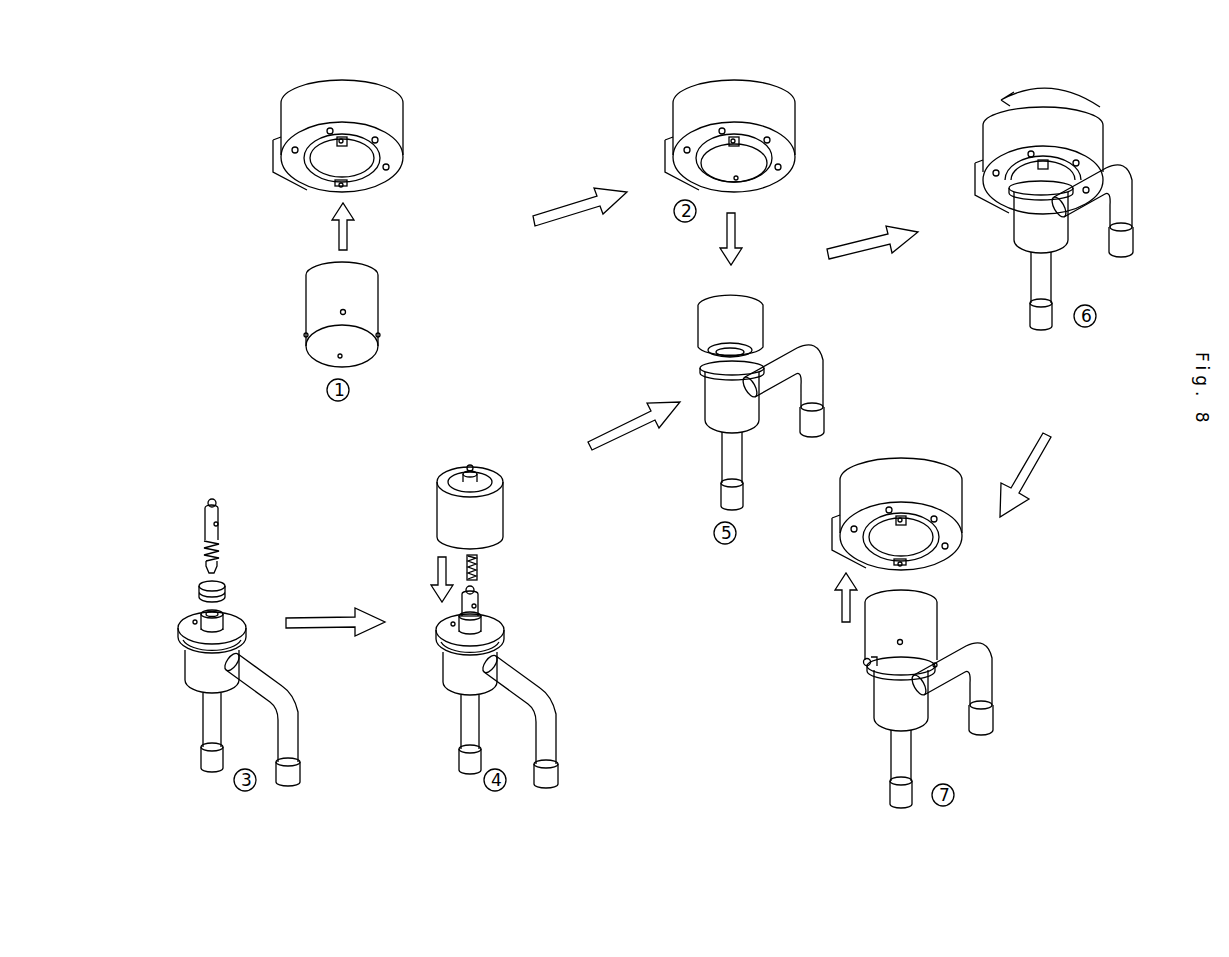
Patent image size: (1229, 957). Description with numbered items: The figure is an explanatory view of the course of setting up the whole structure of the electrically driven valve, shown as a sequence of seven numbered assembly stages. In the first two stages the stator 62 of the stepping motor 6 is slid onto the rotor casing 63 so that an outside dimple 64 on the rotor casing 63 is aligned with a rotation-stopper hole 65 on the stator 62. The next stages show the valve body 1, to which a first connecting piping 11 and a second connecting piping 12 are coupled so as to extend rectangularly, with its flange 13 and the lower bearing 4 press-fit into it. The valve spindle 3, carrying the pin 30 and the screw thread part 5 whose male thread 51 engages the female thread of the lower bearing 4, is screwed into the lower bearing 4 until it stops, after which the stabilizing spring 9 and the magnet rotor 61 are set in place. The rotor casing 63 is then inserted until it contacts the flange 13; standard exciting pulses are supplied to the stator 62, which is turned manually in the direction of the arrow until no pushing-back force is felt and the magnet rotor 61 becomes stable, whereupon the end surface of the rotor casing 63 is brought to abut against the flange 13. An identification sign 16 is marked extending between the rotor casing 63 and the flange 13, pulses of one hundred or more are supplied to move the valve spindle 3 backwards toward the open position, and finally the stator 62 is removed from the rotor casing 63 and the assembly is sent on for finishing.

The valve body 1 is at (190, 673).
The valve spindle 3 is at (205, 523).
The lower bearing 4 is at (223, 627).
The screw thread part 5 is at (205, 551).
The stepping motor 6 is at (287, 105).
The stabilizing spring 9 is at (478, 568).
The first connecting piping 11 is at (205, 725).
The second connecting piping 12 is at (292, 731).
The flange 13 is at (183, 630).
The identification sign 16 is at (866, 659).
The pin 30 is at (220, 525).
The male thread 51 is at (220, 556).
The magnet rotor 61 is at (498, 510).
The stator 62 is at (290, 125).
The rotor casing 63 is at (315, 302).
The outside dimple 64 is at (377, 337).
The rotation-stopper hole 65 is at (370, 172).